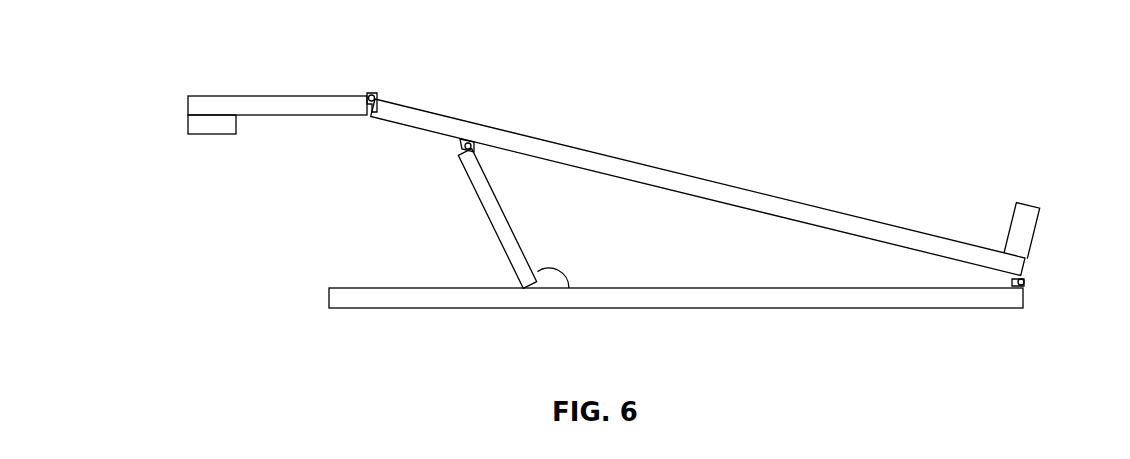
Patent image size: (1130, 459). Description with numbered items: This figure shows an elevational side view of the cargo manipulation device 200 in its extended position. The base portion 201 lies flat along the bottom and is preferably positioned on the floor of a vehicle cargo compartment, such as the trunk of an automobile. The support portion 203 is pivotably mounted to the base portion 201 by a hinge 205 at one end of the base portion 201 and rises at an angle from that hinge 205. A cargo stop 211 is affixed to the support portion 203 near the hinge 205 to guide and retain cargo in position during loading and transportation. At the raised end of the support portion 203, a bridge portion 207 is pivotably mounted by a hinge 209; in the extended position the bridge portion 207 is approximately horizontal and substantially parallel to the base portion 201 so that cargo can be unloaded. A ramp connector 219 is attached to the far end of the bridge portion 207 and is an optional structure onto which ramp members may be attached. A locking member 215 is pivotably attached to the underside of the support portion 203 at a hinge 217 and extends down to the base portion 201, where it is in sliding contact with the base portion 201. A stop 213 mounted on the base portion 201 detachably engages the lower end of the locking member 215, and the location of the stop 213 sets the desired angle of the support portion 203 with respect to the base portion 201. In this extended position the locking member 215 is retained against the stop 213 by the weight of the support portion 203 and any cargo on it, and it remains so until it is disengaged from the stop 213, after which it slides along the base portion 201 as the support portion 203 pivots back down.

The cargo manipulation device 200 is at (843, 79).
The base portion 201 is at (703, 300).
The support portion 203 is at (700, 183).
The hinge 205 is at (1025, 280).
The bridge portion 207 is at (278, 108).
The hinge 209 is at (374, 94).
The cargo stop 211 is at (1025, 222).
The stop 213 is at (548, 283).
The locking member 215 is at (498, 220).
The hinge 217 is at (470, 143).
The ramp connector 219 is at (213, 126).